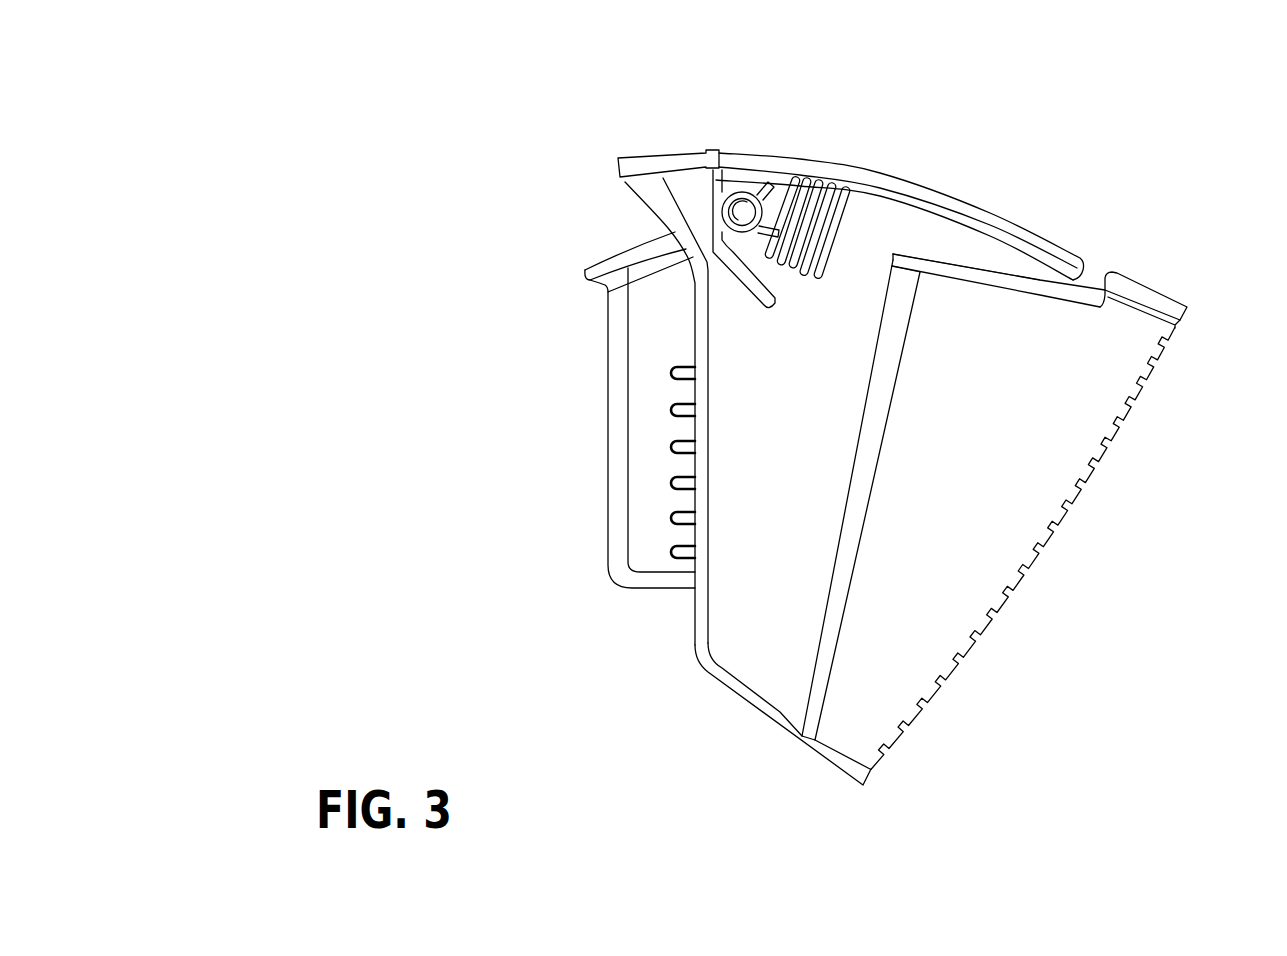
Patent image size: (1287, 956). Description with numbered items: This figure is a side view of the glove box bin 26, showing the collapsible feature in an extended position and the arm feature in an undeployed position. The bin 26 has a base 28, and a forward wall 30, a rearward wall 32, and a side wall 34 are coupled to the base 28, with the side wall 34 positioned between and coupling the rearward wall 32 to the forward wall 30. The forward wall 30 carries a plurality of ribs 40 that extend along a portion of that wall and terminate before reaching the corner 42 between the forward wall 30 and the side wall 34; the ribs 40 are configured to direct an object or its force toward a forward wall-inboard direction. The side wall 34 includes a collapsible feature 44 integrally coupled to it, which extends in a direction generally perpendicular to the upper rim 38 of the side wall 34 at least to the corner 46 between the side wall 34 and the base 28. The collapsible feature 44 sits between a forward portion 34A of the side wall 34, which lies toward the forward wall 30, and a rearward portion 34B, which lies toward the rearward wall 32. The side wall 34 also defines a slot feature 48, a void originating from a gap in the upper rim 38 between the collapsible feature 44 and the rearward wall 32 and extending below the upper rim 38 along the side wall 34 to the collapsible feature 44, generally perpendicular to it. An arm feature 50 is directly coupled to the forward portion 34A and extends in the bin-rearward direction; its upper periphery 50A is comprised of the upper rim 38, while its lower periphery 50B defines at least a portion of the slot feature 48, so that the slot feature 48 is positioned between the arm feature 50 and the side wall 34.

The bin 26 is at (885, 168).
The base 28 is at (750, 710).
The forward wall 30 is at (695, 315).
The rearward wall 32 is at (1037, 562).
The side wall 34 is at (1037, 435).
The forward portion 34A is at (777, 348).
The rearward portion 34B is at (965, 471).
The upper rim 38 is at (757, 150).
The ribs 40 is at (677, 482).
The corner 42 is at (703, 597).
The collapsible feature 44 is at (861, 474).
The corner 46 is at (775, 712).
The slot feature 48 is at (1018, 276).
The arm feature 50 is at (952, 246).
The upper periphery 50A is at (1001, 207).
The lower periphery 50B is at (1004, 266).